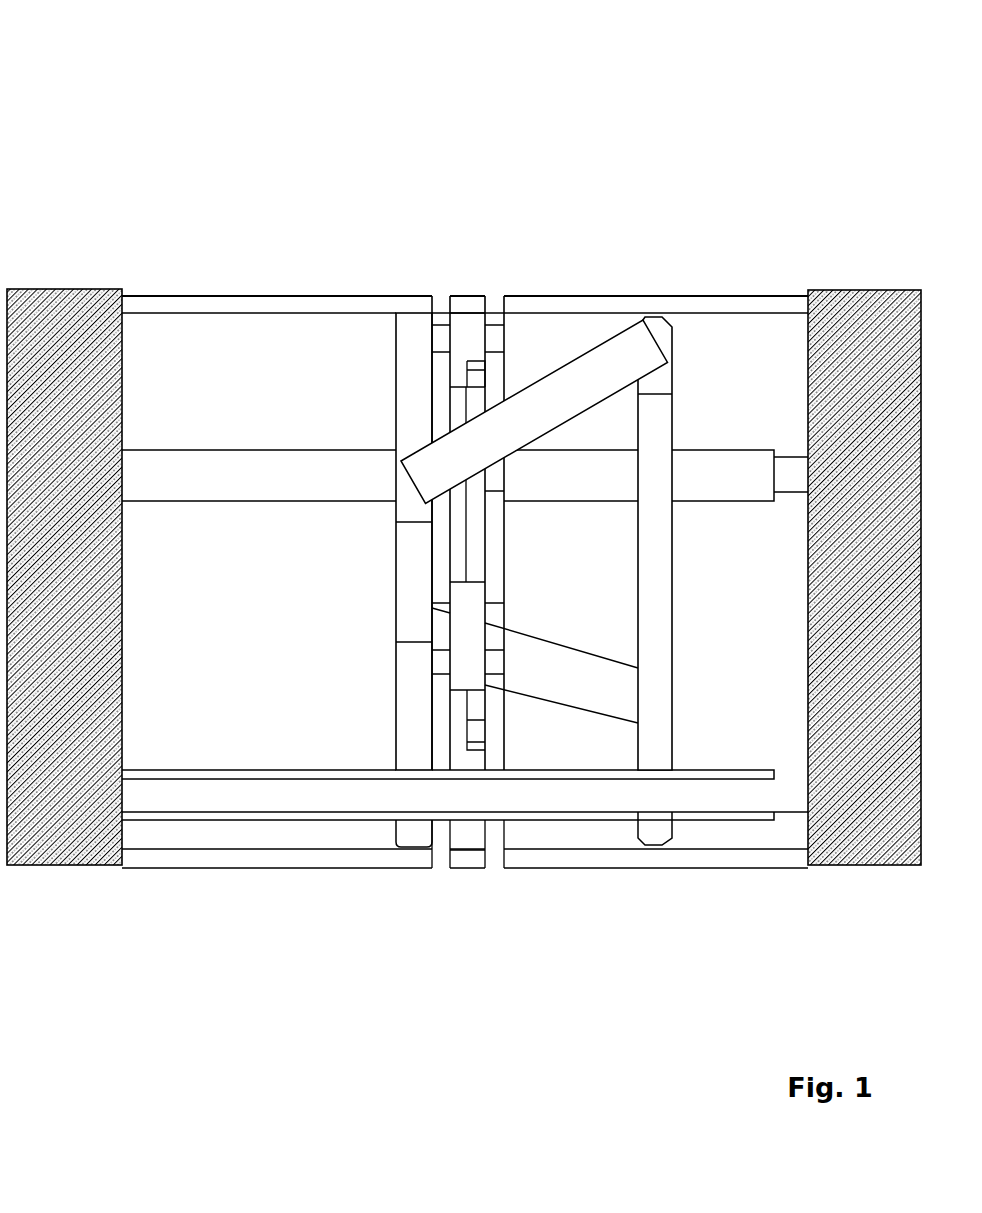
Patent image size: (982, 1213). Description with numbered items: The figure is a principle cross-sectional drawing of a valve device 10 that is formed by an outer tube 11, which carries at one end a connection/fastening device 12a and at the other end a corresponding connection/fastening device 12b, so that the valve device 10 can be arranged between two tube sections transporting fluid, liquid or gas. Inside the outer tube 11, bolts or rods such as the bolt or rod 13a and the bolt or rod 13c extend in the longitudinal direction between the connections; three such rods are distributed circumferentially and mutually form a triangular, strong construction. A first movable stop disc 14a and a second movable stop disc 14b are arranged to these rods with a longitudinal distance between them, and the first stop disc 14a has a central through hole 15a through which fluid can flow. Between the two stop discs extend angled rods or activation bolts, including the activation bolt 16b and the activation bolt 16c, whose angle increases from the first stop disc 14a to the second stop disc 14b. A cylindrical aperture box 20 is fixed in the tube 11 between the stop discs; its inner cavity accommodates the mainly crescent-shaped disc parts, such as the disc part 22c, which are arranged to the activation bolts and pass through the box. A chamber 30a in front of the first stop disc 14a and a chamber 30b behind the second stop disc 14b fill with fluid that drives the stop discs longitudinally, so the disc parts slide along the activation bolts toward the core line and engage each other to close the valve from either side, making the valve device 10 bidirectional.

The valve device 10 is at (208, 190).
The outer tube 11 is at (318, 300).
The connection/fastening device 12a is at (70, 288).
The connection/fastening device 12b is at (872, 290).
The bolt or rod 13a is at (585, 790).
The bolt or rod 13c is at (702, 480).
The first movable stop disc 14a is at (412, 727).
The second movable stop disc 14b is at (655, 565).
The central through hole 15a is at (380, 633).
The rod or activation bolt 16b is at (568, 385).
The rod or activation bolt 16c is at (598, 678).
The cylindrical aperture box 20 is at (466, 318).
The crescent-shaped disc part 22c is at (470, 745).
The chamber 30a is at (218, 742).
The chamber 30b is at (787, 712).